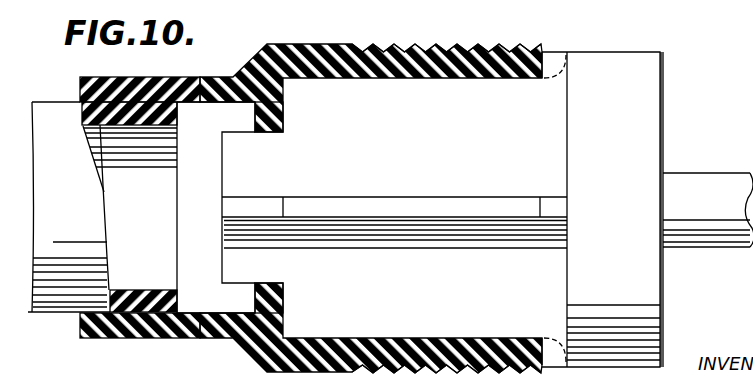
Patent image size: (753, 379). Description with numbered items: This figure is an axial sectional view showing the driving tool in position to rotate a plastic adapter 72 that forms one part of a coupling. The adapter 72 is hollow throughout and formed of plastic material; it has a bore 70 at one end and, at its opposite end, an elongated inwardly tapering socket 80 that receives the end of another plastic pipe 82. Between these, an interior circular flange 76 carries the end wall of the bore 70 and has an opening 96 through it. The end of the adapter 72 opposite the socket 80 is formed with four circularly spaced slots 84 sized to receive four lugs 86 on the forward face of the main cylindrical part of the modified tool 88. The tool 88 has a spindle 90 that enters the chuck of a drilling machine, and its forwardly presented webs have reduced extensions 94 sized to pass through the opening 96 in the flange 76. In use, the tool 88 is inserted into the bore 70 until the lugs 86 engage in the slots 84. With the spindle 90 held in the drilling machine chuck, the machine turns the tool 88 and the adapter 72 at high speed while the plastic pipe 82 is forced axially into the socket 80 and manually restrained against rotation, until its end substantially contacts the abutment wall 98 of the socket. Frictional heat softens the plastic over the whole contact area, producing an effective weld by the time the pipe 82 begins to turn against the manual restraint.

The bore 70 is at (413, 46).
The adapter 72 is at (292, 53).
The interior flange 76 is at (268, 305).
The socket 80 is at (201, 77).
The plastic pipe 82 is at (120, 291).
The slots 84 is at (549, 197).
The lugs 86 is at (557, 52).
The tool 88 is at (623, 60).
The spindle 90 is at (702, 182).
The reduced extensions 94 is at (263, 185).
The opening 96 is at (276, 132).
The abutment wall 98 is at (254, 119).